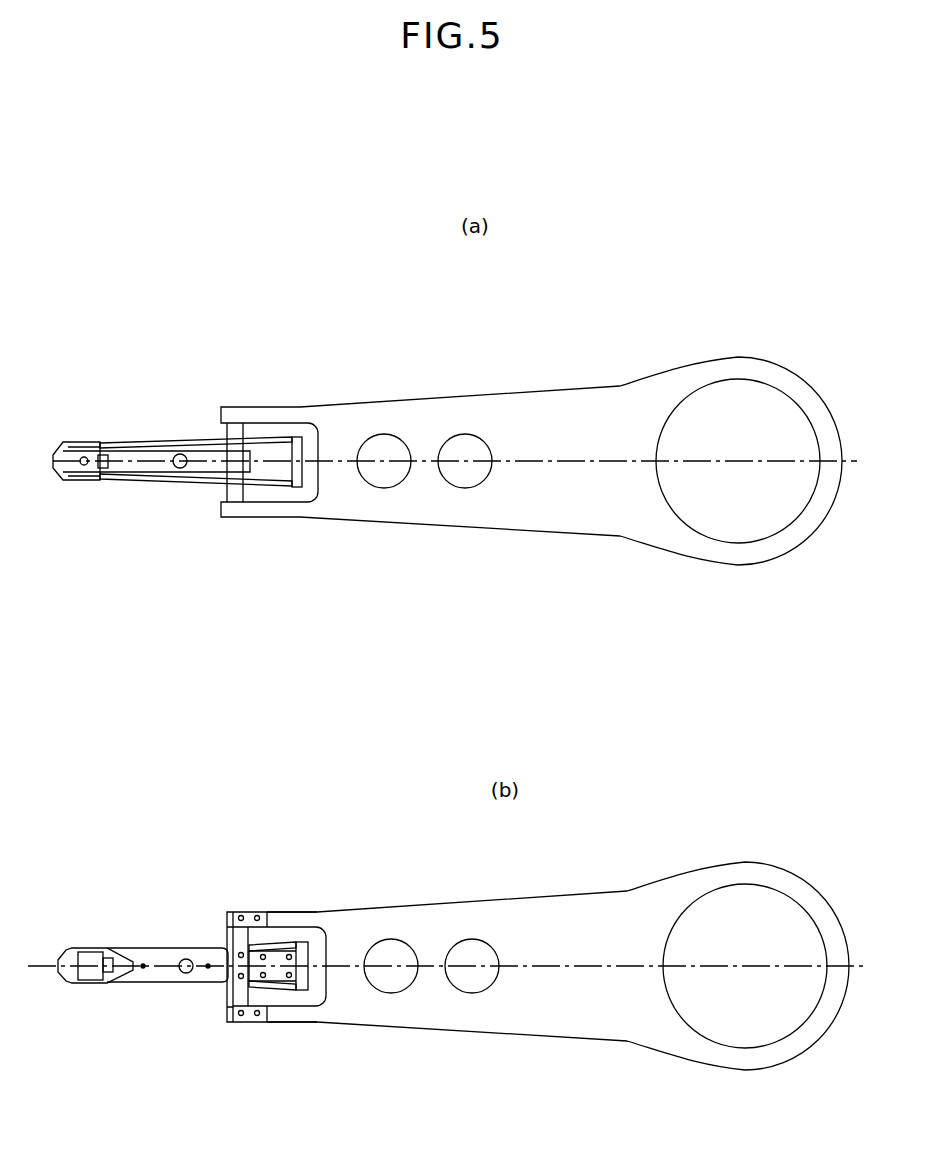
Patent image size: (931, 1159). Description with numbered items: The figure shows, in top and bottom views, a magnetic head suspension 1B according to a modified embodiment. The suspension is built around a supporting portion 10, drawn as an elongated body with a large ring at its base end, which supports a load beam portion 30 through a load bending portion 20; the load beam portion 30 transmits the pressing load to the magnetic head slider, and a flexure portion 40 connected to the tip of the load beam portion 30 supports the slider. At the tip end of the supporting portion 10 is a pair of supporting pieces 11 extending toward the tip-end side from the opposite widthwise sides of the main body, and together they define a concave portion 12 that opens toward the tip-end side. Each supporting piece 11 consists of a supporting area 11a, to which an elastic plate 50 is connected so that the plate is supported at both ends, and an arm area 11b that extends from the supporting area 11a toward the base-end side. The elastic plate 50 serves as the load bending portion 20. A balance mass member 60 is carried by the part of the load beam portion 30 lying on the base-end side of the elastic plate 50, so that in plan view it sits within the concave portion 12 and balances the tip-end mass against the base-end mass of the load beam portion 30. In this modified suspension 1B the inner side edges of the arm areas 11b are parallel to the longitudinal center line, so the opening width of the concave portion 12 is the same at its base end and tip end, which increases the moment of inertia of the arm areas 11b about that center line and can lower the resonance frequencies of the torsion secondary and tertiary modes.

The magnetic head suspension 1B is at (497, 352).
The supporting portion 10 is at (420, 537).
The supporting pieces 11 is at (208, 326).
The supporting areas 11a is at (232, 407).
The arm areas 11b is at (268, 407).
The concave portion 12 is at (286, 490).
The load bending portion 20 is at (198, 713).
The load beam portion 30 is at (197, 468).
The flexure portion 40 is at (115, 442).
The elastic plate 50 is at (210, 432).
The balance mass member 60 is at (297, 448).